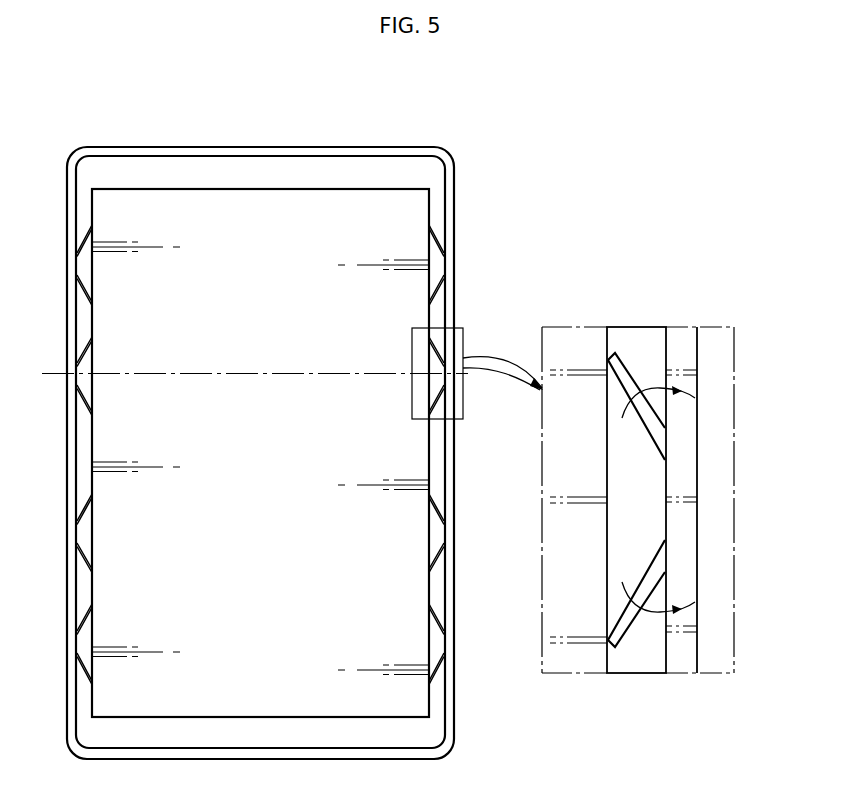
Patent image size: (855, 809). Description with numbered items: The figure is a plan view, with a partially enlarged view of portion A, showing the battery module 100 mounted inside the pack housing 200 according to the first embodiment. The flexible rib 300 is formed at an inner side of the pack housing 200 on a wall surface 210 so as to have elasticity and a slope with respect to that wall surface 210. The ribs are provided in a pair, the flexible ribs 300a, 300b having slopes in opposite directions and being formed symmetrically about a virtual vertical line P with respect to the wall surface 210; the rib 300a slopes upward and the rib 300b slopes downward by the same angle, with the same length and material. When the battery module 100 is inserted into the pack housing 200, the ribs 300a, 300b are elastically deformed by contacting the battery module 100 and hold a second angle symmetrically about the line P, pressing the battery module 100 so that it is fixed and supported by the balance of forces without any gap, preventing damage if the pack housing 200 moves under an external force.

The pack housing 200 is at (260, 414).
The wall surface 210 is at (454, 208).
The battery module 100 is at (410, 237).
The flexible rib 300 is at (615, 448).
The flexible rib 300a is at (623, 378).
The flexible rib 300b is at (620, 620).
The portion A is at (463, 335).
The virtual vertical line P is at (246, 373).